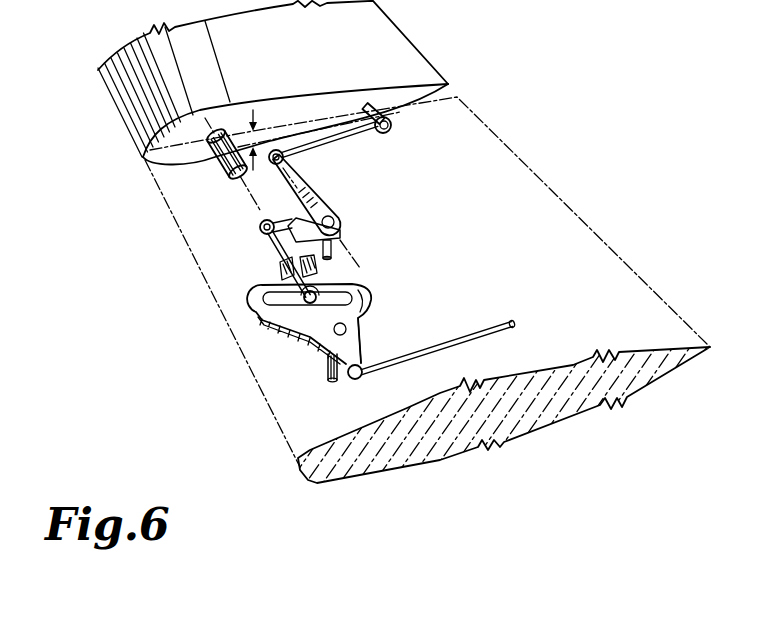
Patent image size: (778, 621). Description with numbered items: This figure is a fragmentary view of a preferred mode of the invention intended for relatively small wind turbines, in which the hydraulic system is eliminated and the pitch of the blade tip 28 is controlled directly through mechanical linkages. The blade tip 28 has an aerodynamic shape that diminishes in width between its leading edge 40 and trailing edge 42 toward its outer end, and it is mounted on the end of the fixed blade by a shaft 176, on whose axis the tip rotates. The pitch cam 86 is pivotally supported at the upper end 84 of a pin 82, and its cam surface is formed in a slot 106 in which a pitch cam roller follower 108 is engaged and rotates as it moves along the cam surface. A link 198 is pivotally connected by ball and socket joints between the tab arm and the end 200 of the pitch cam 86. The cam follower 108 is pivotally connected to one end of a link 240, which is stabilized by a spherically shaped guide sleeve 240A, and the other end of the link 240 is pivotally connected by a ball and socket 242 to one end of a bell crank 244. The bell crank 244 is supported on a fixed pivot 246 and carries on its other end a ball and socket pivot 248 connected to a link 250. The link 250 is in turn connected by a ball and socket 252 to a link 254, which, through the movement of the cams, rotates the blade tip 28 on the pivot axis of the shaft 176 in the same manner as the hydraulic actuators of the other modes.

The blade tip 28 is at (245, 36).
The leading edge 40 is at (120, 120).
The trailing edge 42 is at (398, 29).
The shaft 176 is at (240, 133).
The ball and socket pivot 248 is at (284, 152).
The link 250 is at (340, 134).
The ball and socket 252 is at (392, 126).
The link 254 is at (373, 106).
The bell crank 244 is at (345, 225).
The fixed pivot 246 is at (335, 250).
The ball and socket 242 is at (262, 228).
The link 240 is at (288, 262).
The spherically shaped guide sleeve 240A is at (258, 289).
The pitch cam roller follower 108 is at (336, 296).
The slot 106 is at (370, 300).
The upper end of pin 84 is at (346, 329).
The pitch cam 86 is at (353, 349).
The pin 82 is at (327, 373).
The end of pitch cam 200 is at (355, 380).
The link 198 is at (462, 342).